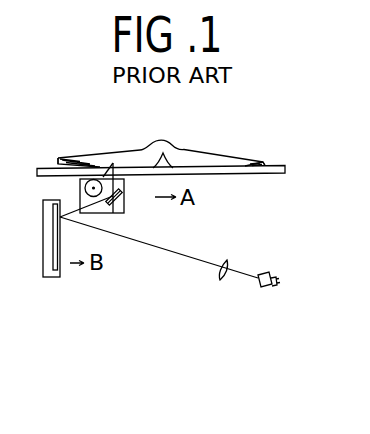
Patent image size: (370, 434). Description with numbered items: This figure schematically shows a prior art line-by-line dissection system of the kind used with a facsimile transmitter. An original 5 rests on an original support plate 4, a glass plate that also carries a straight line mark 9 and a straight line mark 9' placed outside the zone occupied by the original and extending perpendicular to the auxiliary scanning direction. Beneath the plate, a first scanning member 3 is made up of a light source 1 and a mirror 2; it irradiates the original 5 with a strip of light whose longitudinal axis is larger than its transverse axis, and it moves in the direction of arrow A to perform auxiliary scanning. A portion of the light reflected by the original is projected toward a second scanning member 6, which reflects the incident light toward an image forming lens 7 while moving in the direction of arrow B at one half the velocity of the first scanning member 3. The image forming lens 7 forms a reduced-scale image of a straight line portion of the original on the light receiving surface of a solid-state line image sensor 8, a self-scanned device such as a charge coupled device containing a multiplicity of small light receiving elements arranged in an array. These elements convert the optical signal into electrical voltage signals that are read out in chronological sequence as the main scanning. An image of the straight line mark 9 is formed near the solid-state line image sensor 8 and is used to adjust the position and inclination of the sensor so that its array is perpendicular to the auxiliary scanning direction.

The light source 1 is at (86, 191).
The mirror 2 is at (122, 192).
The first scanning member 3 is at (122, 213).
The original support plate 4 is at (235, 174).
The original 5 is at (197, 150).
The second scanning member 6 is at (43, 250).
The image forming lens 7 is at (225, 260).
The solid-state line image sensor 8 is at (263, 272).
The straight line mark 9 is at (275, 140).
The straight line mark 9' is at (45, 139).